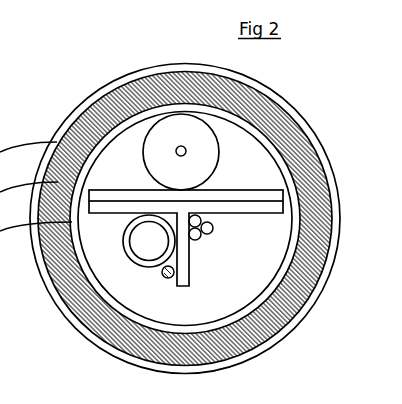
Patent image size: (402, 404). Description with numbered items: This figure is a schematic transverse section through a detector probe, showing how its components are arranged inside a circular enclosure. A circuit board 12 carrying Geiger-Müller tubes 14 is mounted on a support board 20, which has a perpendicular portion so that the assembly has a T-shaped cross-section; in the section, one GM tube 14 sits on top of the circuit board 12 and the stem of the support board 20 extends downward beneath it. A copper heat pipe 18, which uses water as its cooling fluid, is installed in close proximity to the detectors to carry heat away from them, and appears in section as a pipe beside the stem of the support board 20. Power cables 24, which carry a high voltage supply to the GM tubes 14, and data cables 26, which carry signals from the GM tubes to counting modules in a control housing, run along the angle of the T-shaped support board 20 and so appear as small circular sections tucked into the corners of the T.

The printed circuit board 12 is at (235, 192).
The Geiger-Müller tubes 14 is at (198, 142).
The copper heat pipe 18 is at (122, 247).
The support board 20 is at (241, 204).
The power cables 24 is at (162, 274).
The data cables 26 is at (198, 240).